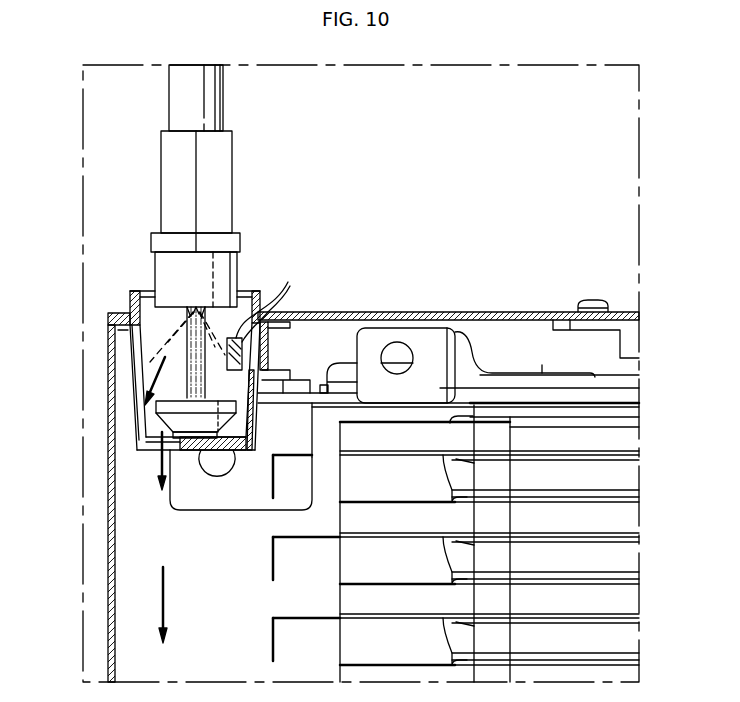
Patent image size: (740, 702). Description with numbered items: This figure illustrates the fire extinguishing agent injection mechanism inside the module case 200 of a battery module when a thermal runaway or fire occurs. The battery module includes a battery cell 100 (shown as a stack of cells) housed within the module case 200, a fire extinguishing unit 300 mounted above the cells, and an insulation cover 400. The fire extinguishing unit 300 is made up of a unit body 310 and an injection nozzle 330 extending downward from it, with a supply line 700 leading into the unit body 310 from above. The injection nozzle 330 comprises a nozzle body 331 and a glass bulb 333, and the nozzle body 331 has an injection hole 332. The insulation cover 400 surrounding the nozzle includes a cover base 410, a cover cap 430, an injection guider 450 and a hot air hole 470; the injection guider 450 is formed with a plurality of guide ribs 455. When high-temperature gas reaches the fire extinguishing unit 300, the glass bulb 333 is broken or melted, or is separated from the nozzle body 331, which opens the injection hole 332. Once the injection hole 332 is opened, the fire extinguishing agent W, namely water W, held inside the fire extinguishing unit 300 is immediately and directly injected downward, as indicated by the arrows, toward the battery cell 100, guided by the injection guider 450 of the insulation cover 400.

The battery cell 100 is at (649, 510).
The module case 200 is at (108, 566).
The fire extinguishing unit 300 is at (208, 219).
The unit body 310 is at (161, 171).
The injection nozzle 330 is at (155, 269).
The nozzle body 331 is at (167, 409).
The injection hole 332 is at (180, 316).
The glass bulb 333 is at (190, 373).
The insulation cover 400 is at (127, 455).
The cover base 410 is at (117, 319).
The cover cap 430 is at (198, 453).
The injection guider 450 is at (114, 415).
The guide rib 455 is at (137, 395).
The hot air hole 470 is at (272, 300).
The supply line 700 is at (169, 96).
The fire extinguishing agent (water) W is at (163, 597).